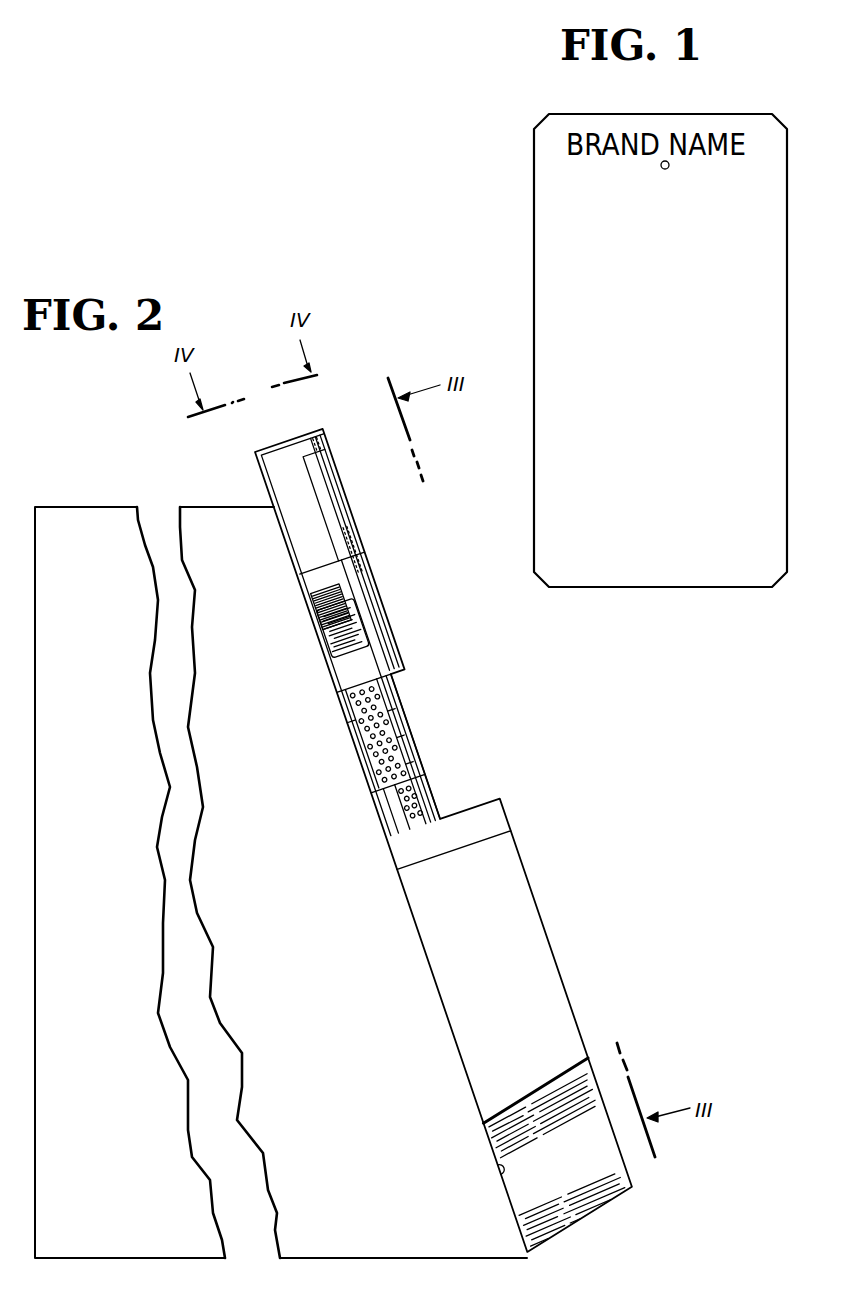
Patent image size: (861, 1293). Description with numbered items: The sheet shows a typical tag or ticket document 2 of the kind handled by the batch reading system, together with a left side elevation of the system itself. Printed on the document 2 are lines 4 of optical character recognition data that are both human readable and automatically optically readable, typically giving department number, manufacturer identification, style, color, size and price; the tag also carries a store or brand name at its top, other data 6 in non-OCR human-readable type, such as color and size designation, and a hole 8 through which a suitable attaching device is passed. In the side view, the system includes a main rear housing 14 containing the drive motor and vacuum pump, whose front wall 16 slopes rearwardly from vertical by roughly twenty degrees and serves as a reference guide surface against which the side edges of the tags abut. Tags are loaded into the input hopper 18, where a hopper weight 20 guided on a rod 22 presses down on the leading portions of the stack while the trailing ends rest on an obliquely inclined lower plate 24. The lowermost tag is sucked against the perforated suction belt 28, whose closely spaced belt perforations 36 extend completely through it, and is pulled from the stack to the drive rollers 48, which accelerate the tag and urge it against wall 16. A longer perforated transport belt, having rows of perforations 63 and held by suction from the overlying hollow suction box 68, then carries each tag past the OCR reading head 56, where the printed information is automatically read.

In FIG. 1, the tag or ticket document 2 is at (528, 296).
In FIG. 2, the tag or ticket document 2 is at (348, 666).
In FIG. 1, the lines of OCR data 4 is at (549, 297).
In FIG. 1, the other data 6 is at (674, 364).
In FIG. 1, the hole 8 is at (669, 168).
In FIG. 2, the main rear housing 14 is at (295, 872).
In FIG. 2, the front wall 16 is at (497, 1170).
In FIG. 2, the input hopper 18 is at (303, 513).
In FIG. 2, the hopper weight 20 is at (325, 577).
In FIG. 2, the rod 22 is at (343, 532).
In FIG. 2, the lower plate 24 is at (372, 622).
In FIG. 2, the suction belt 28 is at (388, 713).
In FIG. 2, the belt perforations 36 is at (405, 768).
In FIG. 2, the drive rollers 48 is at (413, 788).
In FIG. 2, the OCR reading head 56 is at (508, 974).
In FIG. 2, the perforations 63 is at (423, 810).
In FIG. 2, the suction box 68 is at (427, 823).